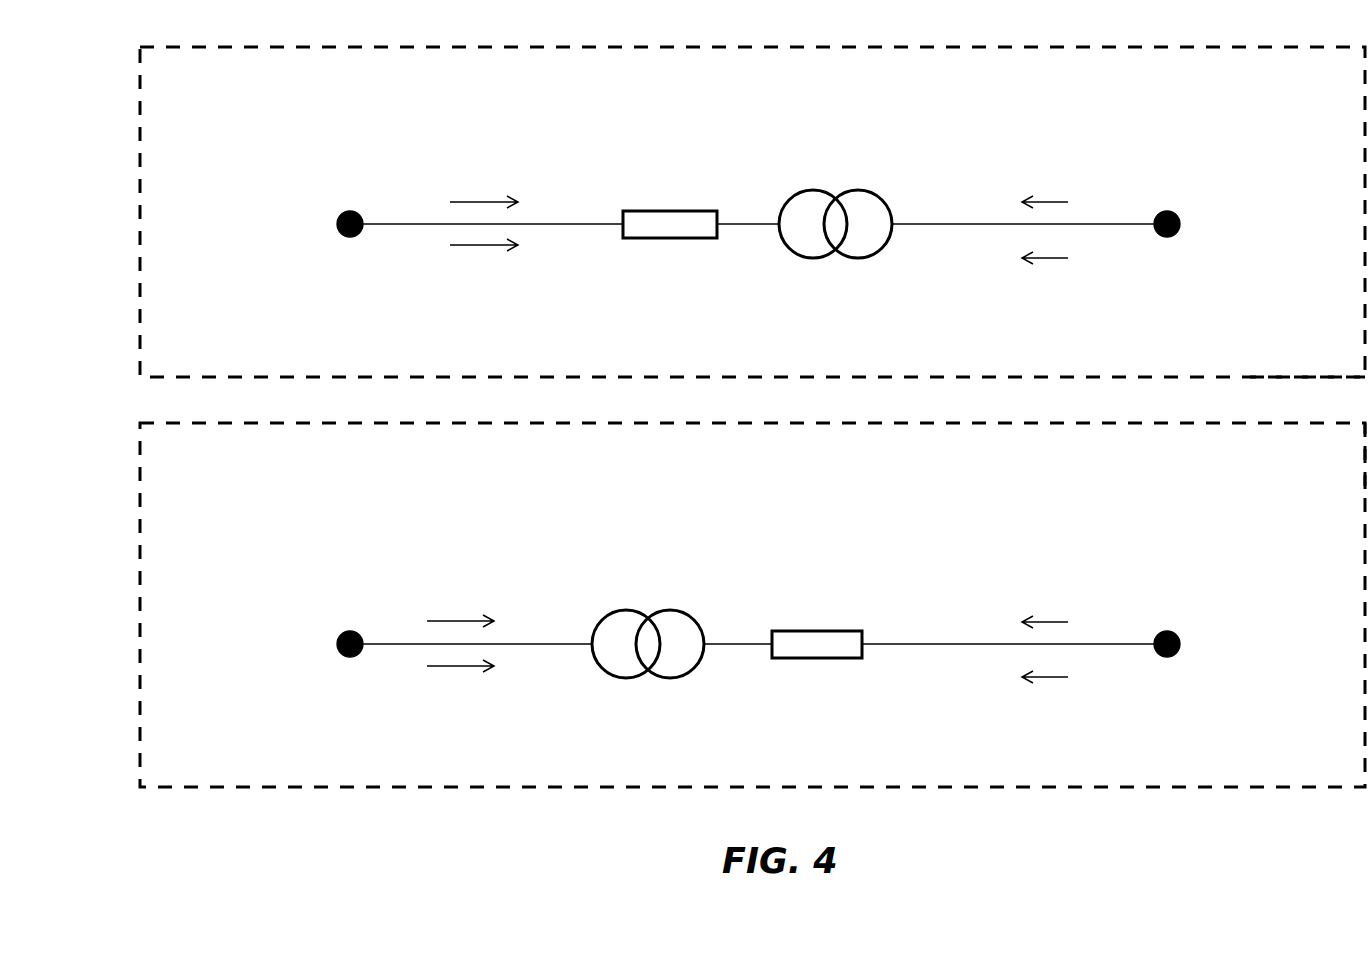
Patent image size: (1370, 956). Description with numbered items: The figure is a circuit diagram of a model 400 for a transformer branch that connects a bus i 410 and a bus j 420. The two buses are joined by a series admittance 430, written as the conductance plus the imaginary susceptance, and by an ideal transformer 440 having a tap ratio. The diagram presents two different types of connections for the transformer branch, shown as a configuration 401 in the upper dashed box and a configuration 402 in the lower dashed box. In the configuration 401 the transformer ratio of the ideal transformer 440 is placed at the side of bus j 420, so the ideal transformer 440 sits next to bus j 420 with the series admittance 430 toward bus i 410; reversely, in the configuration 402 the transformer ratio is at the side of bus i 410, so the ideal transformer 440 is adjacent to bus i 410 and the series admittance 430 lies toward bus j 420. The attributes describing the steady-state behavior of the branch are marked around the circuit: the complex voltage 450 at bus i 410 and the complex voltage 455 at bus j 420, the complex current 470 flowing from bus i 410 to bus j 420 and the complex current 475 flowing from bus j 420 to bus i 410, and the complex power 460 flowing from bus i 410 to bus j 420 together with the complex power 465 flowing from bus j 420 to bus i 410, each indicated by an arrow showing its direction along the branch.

The model for a transformer branch 400 is at (798, 923).
The configuration 401 is at (1298, 377).
The configuration 402 is at (1365, 455).
The bus i 410 is at (340, 234).
The bus j 420 is at (1178, 249).
The series admittance 430 is at (682, 161).
The ideal transformer 440 is at (853, 148).
The complex voltage V_i 450 is at (352, 160).
The complex voltage V_j 455 is at (1150, 178).
The complex power P_ij + jQ_ij 460 is at (478, 162).
The complex power P_ji + jQ_ji 465 is at (1040, 135).
The complex current I_ij 470 is at (520, 280).
The complex current I_ji 475 is at (1058, 313).